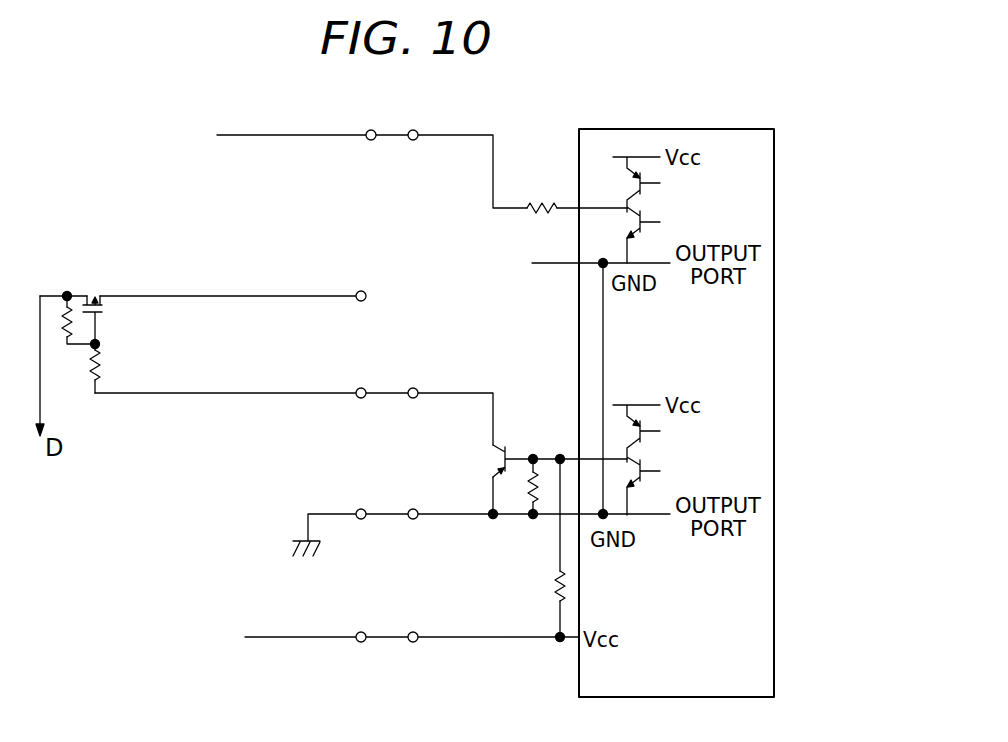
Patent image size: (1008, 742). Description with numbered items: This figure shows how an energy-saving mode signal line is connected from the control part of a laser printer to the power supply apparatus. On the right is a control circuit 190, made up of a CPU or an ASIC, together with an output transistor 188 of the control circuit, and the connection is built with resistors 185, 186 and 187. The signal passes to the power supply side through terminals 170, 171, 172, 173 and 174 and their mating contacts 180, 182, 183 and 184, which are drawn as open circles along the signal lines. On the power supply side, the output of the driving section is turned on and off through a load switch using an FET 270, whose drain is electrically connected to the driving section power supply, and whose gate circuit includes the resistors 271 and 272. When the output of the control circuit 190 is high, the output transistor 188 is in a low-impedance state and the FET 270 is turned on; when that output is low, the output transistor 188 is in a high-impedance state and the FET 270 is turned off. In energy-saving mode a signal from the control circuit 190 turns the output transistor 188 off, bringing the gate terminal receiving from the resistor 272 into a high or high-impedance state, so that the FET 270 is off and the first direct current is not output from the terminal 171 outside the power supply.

The terminal 170 is at (361, 387).
The terminal 171 is at (361, 291).
The terminal 172 is at (362, 632).
The terminal 173 is at (360, 508).
The terminal 174 is at (371, 129).
The contact 180 is at (413, 387).
The contact 182 is at (413, 632).
The contact 183 is at (413, 508).
The contact 184 is at (414, 129).
The resistor 185 is at (555, 591).
The resistor 186 is at (528, 491).
The resistor 187 is at (544, 200).
The output transistor 188 is at (498, 457).
The control circuit 190 is at (758, 128).
The FET 270 is at (98, 297).
The resistor 271 is at (64, 318).
The resistor 272 is at (104, 362).